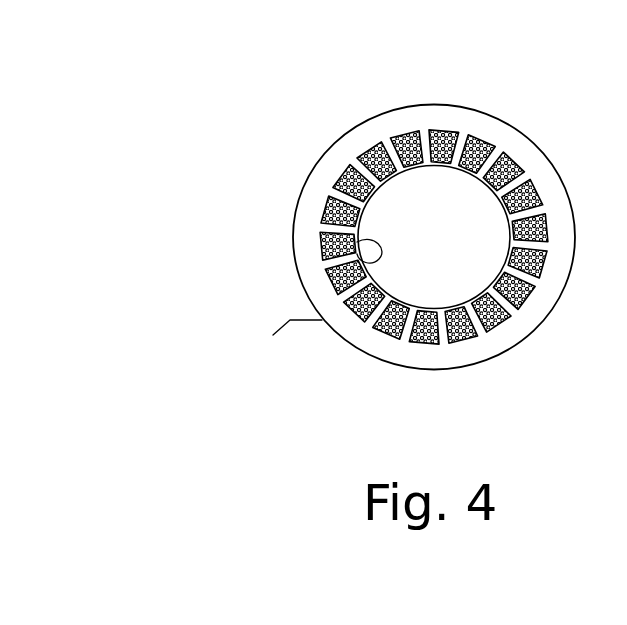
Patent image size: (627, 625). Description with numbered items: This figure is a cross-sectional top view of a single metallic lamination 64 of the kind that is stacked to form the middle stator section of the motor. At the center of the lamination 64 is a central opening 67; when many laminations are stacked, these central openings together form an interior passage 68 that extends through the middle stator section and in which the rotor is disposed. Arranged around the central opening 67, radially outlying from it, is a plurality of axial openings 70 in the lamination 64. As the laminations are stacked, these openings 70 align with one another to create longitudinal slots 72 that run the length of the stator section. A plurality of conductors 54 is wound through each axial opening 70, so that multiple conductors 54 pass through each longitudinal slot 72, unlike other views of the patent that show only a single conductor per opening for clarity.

The conductors 54 is at (493, 139).
The metallic lamination 64 is at (288, 222).
The central opening 67 is at (327, 253).
The interior passage 68 is at (462, 202).
The openings 70 is at (400, 132).
The longitudinal slots 72 is at (532, 300).